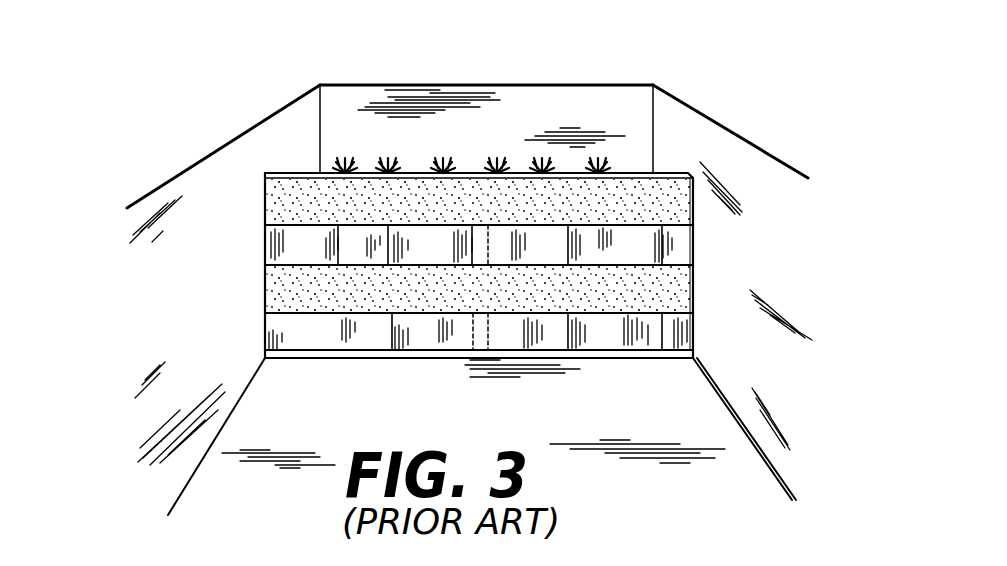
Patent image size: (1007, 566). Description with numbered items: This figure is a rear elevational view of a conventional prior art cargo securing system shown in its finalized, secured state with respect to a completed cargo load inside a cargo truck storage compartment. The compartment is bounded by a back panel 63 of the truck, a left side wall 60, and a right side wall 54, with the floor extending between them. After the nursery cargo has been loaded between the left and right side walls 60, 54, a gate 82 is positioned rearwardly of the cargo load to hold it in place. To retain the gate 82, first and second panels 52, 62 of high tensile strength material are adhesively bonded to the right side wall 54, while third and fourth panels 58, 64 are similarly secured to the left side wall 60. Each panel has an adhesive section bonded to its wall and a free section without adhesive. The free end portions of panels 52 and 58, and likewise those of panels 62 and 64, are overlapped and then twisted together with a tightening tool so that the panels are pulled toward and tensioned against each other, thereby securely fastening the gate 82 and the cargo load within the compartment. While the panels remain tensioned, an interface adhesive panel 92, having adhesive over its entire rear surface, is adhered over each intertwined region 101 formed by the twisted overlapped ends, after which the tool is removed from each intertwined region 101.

The left side wall 60 is at (197, 163).
The right side wall 54 is at (735, 148).
The back panel 63 is at (508, 97).
The gate 82 is at (310, 197).
The third panel 58 is at (338, 248).
The first panel 52 is at (650, 248).
The second panel 62 is at (627, 332).
The fourth panel 64 is at (372, 337).
The interface adhesive panel 92 is at (515, 335).
The intertwined region 101 is at (484, 265).